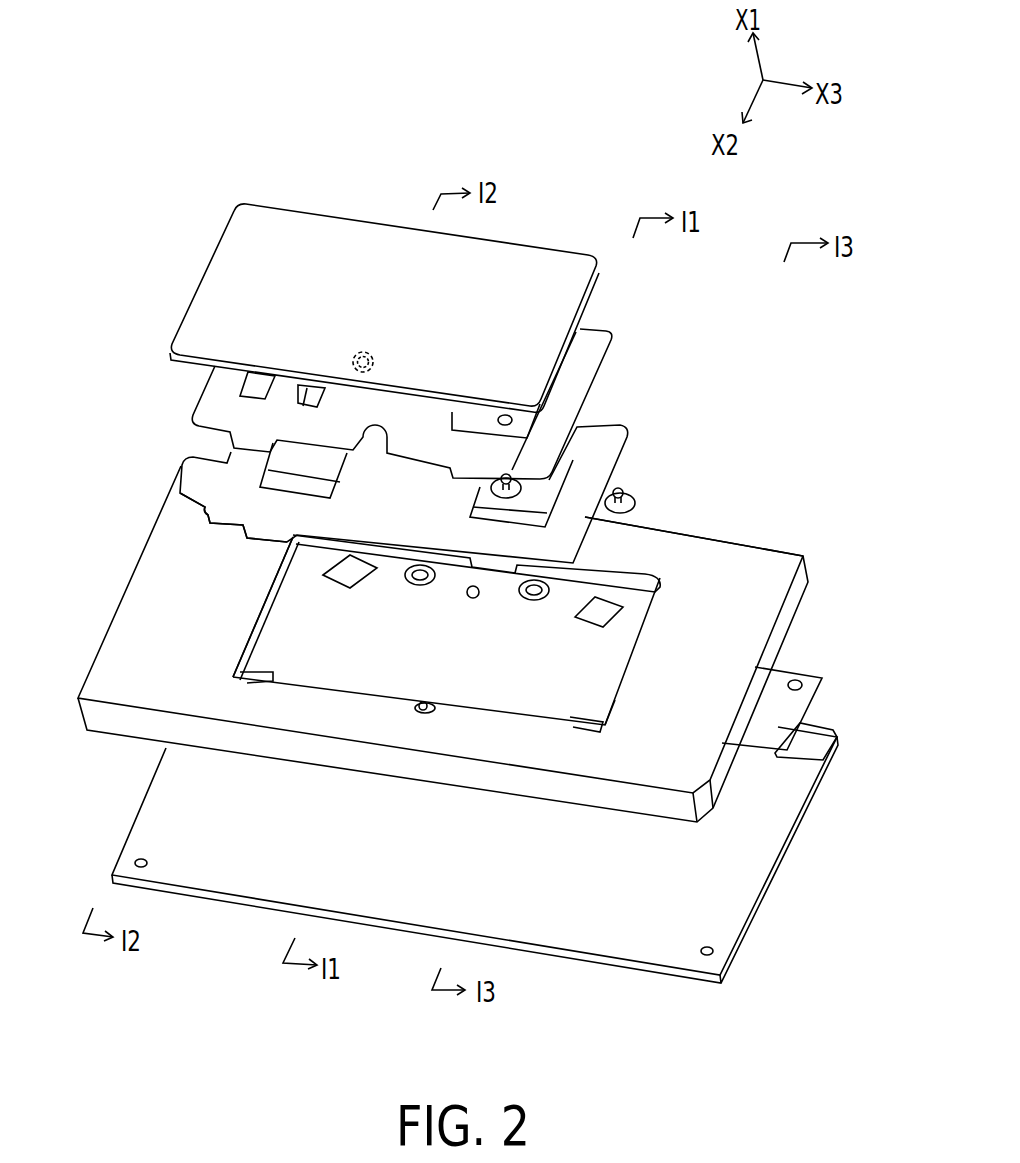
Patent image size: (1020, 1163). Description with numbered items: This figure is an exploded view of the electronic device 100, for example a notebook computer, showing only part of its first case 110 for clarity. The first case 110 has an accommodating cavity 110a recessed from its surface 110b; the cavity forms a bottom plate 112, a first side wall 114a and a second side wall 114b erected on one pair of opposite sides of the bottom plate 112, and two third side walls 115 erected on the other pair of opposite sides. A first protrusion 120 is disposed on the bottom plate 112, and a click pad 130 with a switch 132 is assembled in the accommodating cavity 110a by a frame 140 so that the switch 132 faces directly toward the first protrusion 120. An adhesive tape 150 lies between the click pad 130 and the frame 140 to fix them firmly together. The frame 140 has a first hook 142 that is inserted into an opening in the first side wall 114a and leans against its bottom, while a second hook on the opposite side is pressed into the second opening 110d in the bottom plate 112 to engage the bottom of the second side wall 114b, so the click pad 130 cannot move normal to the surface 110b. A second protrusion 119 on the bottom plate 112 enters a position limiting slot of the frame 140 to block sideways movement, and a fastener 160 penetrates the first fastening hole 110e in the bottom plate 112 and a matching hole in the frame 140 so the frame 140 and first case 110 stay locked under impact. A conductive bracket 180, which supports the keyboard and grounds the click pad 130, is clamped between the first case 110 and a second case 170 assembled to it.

The electronic device 100 is at (860, 1031).
The first case 110 is at (468, 657).
The accommodating cavity 110a is at (345, 657).
The surface 110b is at (165, 600).
The second opening 110d is at (693, 537).
The first fastening hole 110e is at (420, 580).
The bottom plate 112 is at (623, 641).
The first side wall 114a is at (520, 710).
The second side wall 114b is at (643, 597).
The third side walls 115 is at (268, 588).
The second protrusion 119 is at (475, 599).
The first protrusion 120 is at (412, 708).
The click pad 130 is at (212, 278).
The switch 132 is at (350, 351).
The frame 140 is at (399, 478).
The first hook 142 is at (267, 535).
The adhesive tape 150 is at (592, 346).
The fastener 160 is at (628, 497).
The second case 170 is at (763, 890).
The bracket 180 is at (800, 703).